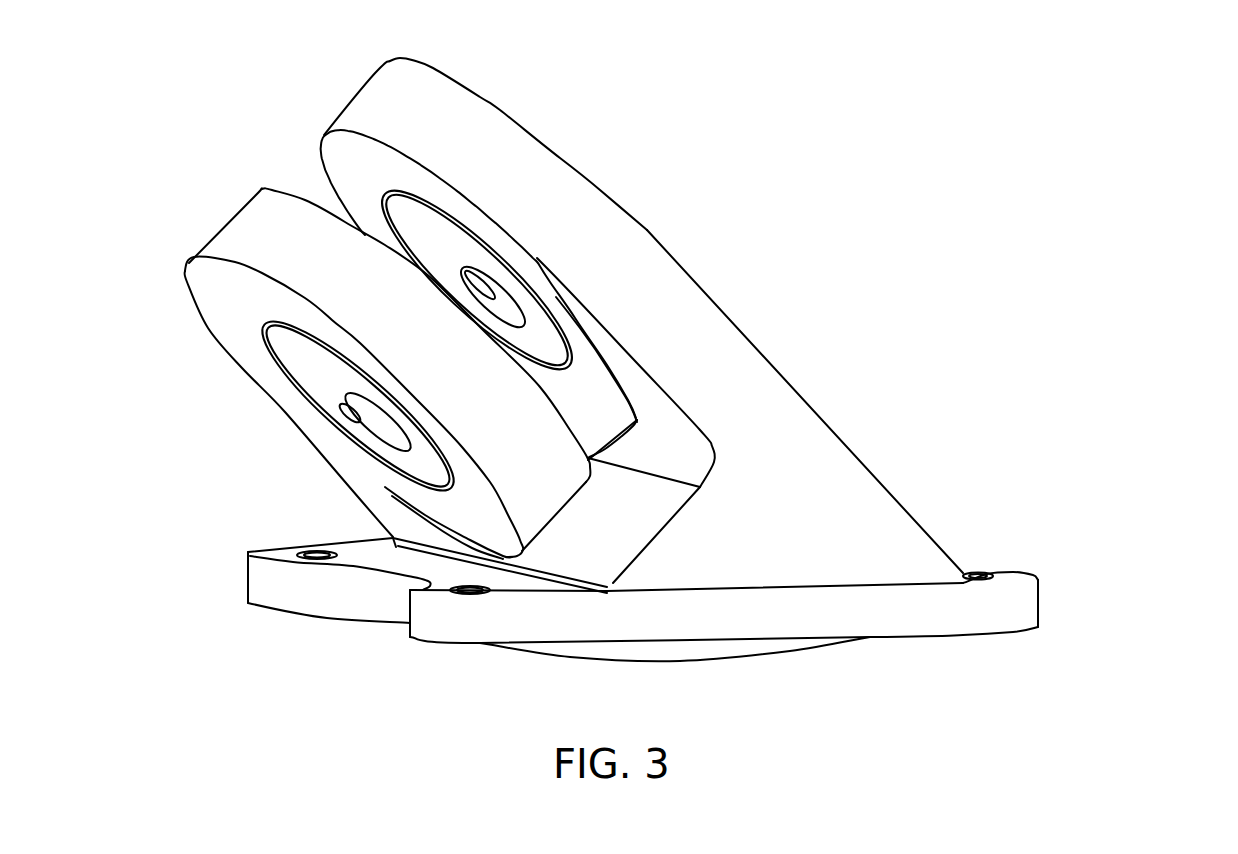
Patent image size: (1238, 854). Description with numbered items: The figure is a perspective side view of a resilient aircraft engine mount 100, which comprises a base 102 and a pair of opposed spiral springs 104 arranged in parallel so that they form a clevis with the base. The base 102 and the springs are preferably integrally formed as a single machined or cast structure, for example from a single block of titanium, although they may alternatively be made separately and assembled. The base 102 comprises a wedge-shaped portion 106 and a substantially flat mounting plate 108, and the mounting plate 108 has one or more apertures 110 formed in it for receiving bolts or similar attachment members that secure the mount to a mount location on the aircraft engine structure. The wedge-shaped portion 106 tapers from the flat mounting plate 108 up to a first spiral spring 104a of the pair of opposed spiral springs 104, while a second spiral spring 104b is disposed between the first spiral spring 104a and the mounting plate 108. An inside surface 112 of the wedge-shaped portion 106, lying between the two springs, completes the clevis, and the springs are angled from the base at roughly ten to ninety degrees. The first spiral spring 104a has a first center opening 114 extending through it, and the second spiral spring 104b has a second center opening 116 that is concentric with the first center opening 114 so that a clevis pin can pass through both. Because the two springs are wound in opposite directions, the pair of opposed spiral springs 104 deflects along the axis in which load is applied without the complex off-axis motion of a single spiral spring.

The resilient aircraft engine mount 100 is at (778, 249).
The base 102 is at (1113, 471).
The pair of opposed spiral springs 104 is at (308, 118).
The first spiral spring 104a is at (646, 232).
The second spiral spring 104b is at (220, 220).
The wedge-shaped portion 106 is at (898, 503).
The mounting plate 108 is at (248, 578).
The apertures 110 is at (317, 550).
The inside surface 112 is at (708, 450).
The first center opening 114 is at (493, 293).
The second center opening 116 is at (377, 423).